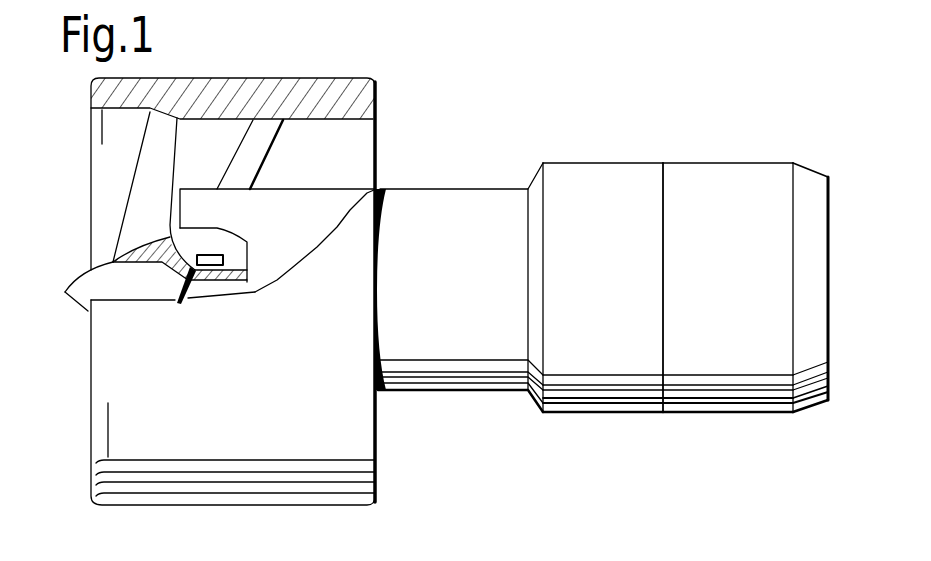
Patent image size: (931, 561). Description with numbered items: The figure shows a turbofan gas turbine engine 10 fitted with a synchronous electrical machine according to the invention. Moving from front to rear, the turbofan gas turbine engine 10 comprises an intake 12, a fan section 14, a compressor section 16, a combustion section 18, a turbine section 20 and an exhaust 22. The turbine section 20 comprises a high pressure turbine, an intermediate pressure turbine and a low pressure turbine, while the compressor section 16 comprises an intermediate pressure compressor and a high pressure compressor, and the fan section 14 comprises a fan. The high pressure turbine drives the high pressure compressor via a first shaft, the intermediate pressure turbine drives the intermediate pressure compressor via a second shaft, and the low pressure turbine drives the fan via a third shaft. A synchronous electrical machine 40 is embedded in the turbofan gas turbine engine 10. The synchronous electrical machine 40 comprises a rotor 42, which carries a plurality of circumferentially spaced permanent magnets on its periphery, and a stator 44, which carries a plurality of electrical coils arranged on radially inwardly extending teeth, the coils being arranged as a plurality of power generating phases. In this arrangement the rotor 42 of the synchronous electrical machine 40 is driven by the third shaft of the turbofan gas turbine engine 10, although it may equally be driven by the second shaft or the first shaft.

The turbofan gas turbine engine 10 is at (645, 162).
The intake 12 is at (105, 216).
The fan section 14 is at (340, 428).
The compressor section 16 is at (465, 348).
The combustion section 18 is at (633, 360).
The turbine section 20 is at (728, 358).
The exhaust 22 is at (810, 348).
The synchronous electrical machine 40 is at (181, 304).
The rotor 42 is at (218, 281).
The stator 44 is at (218, 257).